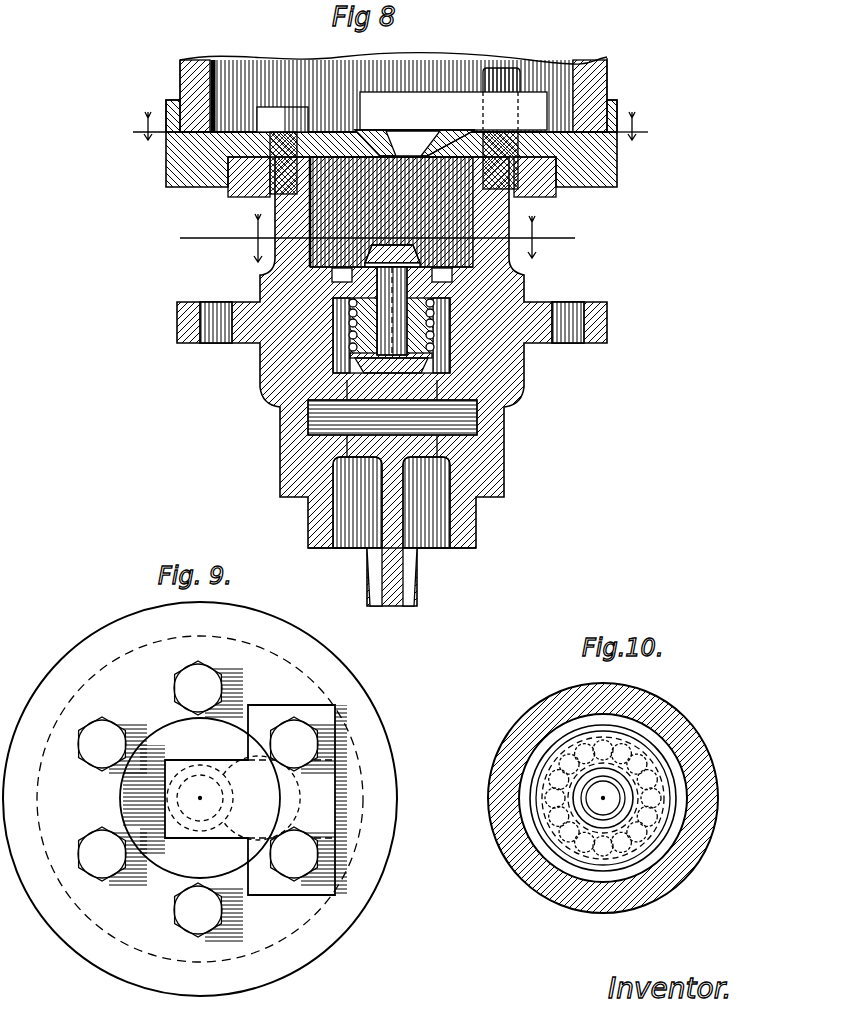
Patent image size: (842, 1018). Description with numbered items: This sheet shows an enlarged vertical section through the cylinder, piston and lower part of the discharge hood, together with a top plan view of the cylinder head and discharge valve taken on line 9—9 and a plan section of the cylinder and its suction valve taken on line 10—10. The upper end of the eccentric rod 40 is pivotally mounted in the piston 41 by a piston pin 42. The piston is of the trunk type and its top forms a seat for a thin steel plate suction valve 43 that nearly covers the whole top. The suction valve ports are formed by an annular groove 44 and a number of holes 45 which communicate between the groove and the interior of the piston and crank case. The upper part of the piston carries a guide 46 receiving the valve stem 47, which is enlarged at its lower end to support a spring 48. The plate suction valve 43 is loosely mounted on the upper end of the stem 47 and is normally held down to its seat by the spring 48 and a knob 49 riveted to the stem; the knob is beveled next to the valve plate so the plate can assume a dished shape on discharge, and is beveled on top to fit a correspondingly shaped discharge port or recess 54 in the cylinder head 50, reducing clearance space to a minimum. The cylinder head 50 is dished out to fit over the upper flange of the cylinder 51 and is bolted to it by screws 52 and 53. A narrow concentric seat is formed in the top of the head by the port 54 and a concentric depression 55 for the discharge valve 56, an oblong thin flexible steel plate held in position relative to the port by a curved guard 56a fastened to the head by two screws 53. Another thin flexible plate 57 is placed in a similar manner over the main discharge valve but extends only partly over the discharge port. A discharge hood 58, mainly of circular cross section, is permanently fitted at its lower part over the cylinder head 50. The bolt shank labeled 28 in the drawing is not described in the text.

In FIG. 8, the section line 9— 9 is at (390, 126).
In FIG. 8, the section line 10— 10 is at (372, 238).
In FIG. 8, the bolt shank 28 is at (507, 262).
In FIG. 8, the eccentric rod 40 is at (403, 584).
In FIG. 8, the piston 41 is at (468, 526).
In FIG. 10, the piston 41 is at (573, 725).
In FIG. 8, the piston pin 42 is at (323, 412).
In FIG. 8, the suction valve 43 is at (340, 267).
In FIG. 10, the suction valve 43 is at (567, 743).
In FIG. 8, the annular groove 44 is at (335, 290).
In FIG. 10, the annular groove 44 is at (530, 763).
In FIG. 8, the holes 45 is at (340, 300).
In FIG. 10, the holes 45 is at (543, 780).
In FIG. 8, the guide 46 is at (483, 287).
In FIG. 8, the valve stem 47 is at (487, 300).
In FIG. 10, the valve stem 47 is at (612, 800).
In FIG. 8, the spring 48 is at (433, 343).
In FIG. 8, the knob 49 is at (417, 252).
In FIG. 10, the knob 49 is at (623, 783).
In FIG. 8, the cylinder head 50 is at (200, 155).
In FIG. 9, the cylinder head 50 is at (96, 634).
In FIG. 8, the cylinder 51 is at (280, 212).
In FIG. 10, the cylinder 51 is at (502, 765).
In FIG. 8, the screws 52 is at (290, 120).
In FIG. 9, the screws 52 is at (108, 732).
In FIG. 8, the screws 53 is at (502, 77).
In FIG. 9, the screws 53 is at (307, 742).
In FIG. 8, the discharge port 54 is at (398, 150).
In FIG. 8, the concentric depression 55 is at (290, 217).
In FIG. 8, the discharge valve 56 is at (368, 124).
In FIG. 9, the discharge valve 56 is at (170, 786).
In FIG. 8, the curved guard 56a is at (393, 100).
In FIG. 9, the curved guard 56a is at (261, 798).
In FIG. 8, the thin flexible plate 57 is at (402, 126).
In FIG. 9, the thin flexible plate 57 is at (242, 718).
In FIG. 8, the discharge hood 58 is at (180, 73).